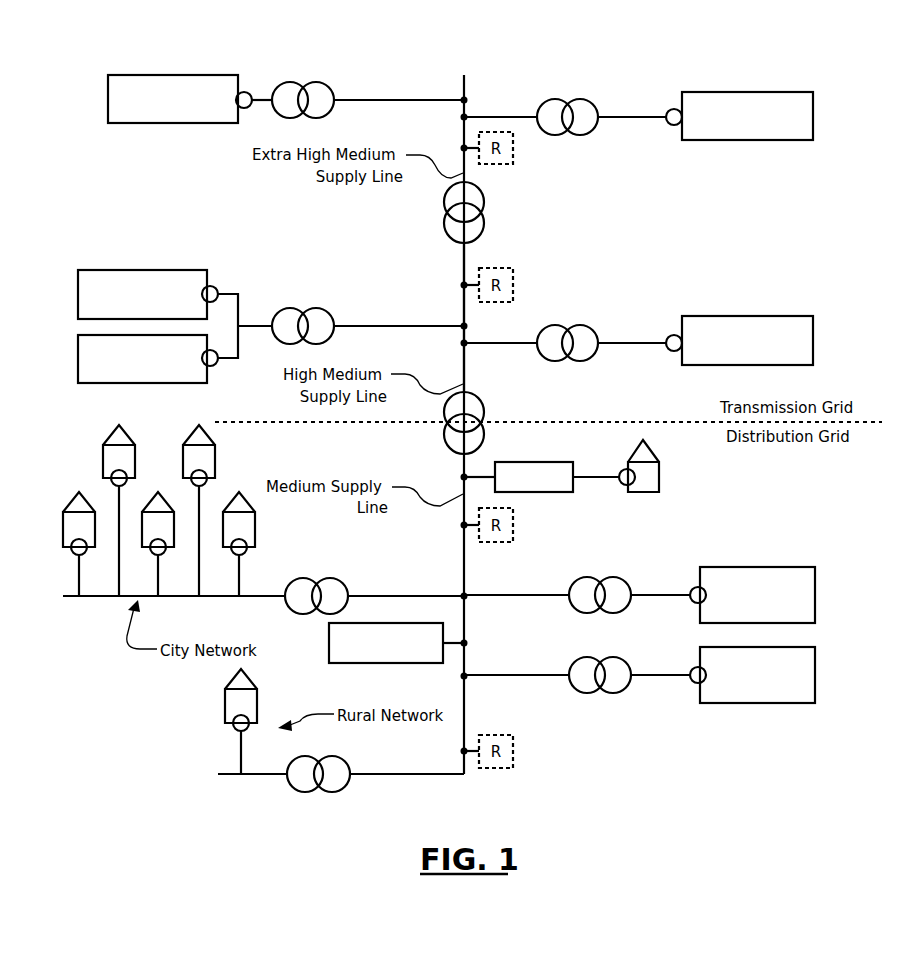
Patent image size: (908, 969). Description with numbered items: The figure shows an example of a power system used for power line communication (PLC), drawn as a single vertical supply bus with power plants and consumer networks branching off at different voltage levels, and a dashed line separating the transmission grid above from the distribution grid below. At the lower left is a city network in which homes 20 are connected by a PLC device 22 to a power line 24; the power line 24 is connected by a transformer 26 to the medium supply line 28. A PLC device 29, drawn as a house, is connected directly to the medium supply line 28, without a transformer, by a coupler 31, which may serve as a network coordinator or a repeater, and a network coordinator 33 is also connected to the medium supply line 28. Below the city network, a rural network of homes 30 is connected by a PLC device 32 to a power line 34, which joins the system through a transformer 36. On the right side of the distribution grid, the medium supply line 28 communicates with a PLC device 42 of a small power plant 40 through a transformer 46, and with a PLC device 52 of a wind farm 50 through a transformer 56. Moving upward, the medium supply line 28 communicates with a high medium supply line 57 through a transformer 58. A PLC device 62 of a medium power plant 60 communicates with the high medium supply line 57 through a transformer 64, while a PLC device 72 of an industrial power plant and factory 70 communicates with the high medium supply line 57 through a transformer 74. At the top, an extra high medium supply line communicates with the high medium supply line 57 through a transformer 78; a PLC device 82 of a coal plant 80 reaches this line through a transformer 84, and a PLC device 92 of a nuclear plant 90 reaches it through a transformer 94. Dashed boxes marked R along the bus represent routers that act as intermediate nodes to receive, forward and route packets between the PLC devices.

The homes 20 is at (102, 447).
The PLC device 22 is at (108, 490).
The power line 24 is at (178, 598).
The transformer 26 is at (330, 578).
The medium supply line 28 is at (385, 596).
The PLC device 29 is at (622, 488).
The homes 30 is at (226, 707).
The coupler 31 is at (543, 492).
The PLC device 32 is at (233, 729).
The network coordinator 33 is at (398, 663).
The power line 34 is at (266, 776).
The transformer 36 is at (345, 790).
The small power plant 40 is at (816, 593).
The PLC device 42 is at (692, 588).
The transformer 46 is at (580, 578).
The wind farm 50 is at (757, 703).
The PLC device 52 is at (692, 668).
The transformer 56 is at (584, 659).
The high medium supply line 57 is at (462, 262).
The transformer 58 is at (485, 410).
The medium power plant 60 is at (747, 316).
The PLC device 62 is at (672, 335).
The transformer 64 is at (549, 325).
The industrial power plant and factory 70 is at (184, 257).
The PLC device 72 is at (214, 287).
The transformer 74 is at (317, 308).
The transformer 78 is at (483, 216).
The coal plant 80 is at (744, 92).
The PLC device 82 is at (672, 108).
The transformer 84 is at (554, 99).
The nuclear plant 90 is at (186, 75).
The PLC device 92 is at (246, 92).
The transformer 94 is at (321, 82).